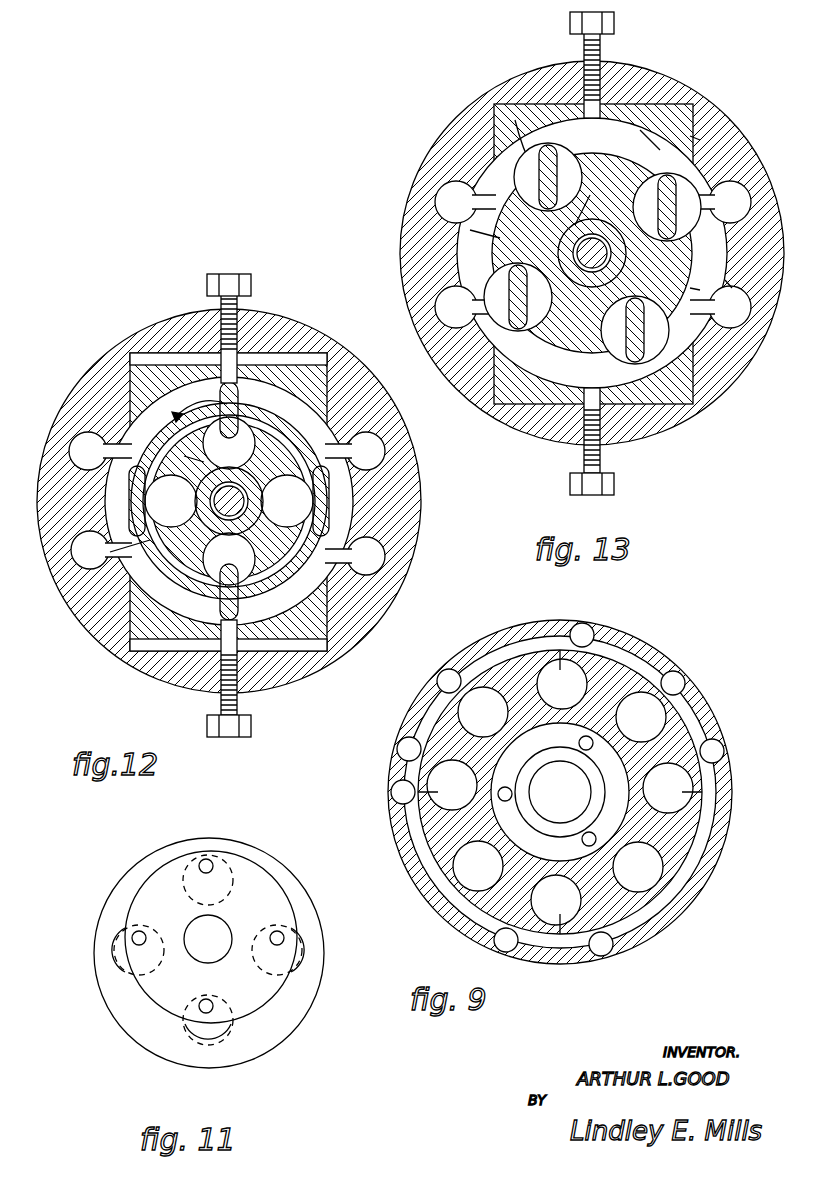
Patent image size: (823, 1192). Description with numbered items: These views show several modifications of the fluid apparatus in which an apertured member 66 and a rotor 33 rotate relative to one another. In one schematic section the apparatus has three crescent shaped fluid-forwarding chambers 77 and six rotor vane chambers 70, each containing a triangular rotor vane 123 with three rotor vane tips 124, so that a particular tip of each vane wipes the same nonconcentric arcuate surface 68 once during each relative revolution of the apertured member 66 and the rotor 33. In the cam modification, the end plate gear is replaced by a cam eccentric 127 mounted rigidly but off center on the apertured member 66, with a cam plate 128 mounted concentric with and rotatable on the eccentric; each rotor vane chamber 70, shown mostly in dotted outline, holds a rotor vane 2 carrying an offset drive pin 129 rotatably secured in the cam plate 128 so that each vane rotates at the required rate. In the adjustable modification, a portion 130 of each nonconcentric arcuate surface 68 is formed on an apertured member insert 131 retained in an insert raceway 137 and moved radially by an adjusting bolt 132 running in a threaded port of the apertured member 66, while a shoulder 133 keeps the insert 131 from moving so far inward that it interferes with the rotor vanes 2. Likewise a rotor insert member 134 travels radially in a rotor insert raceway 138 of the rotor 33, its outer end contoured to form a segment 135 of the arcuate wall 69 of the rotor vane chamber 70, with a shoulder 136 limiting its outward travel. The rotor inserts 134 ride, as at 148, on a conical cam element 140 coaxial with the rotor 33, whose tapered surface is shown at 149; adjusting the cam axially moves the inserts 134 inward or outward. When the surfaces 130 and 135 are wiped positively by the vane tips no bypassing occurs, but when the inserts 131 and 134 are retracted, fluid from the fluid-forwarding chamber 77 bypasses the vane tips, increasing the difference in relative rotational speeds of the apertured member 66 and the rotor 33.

In FIG. 12, the rotor vane 2 is at (197, 384).
In FIG. 13, the rotor vane 2 is at (507, 300).
In FIG. 12, the rotor 33 is at (148, 540).
In FIG. 13, the rotor 33 is at (573, 342).
In FIG. 9, the rotor 33 is at (709, 740).
In FIG. 12, the apertured member 66 is at (366, 599).
In FIG. 13, the apertured member 66 is at (763, 183).
In FIG. 9, the apertured member 66 is at (644, 645).
In FIG. 11, the apertured member 66 is at (115, 990).
In FIG. 12, the nonconcentric arcuate surface 68 is at (104, 455).
In FIG. 13, the nonconcentric arcuate surface 68 is at (507, 210).
In FIG. 9, the nonconcentric arcuate surface 68 is at (582, 641).
In FIG. 12, the wall of rotor vane chamber 69 is at (253, 408).
In FIG. 13, the wall of rotor vane chamber 69 is at (565, 206).
In FIG. 12, the rotor vane chamber 70 is at (230, 388).
In FIG. 13, the rotor vane chamber 70 is at (619, 338).
In FIG. 9, the rotor vane chamber 70 is at (664, 706).
In FIG. 11, the rotor vane chamber 70 is at (170, 885).
In FIG. 12, the fluid-forwarding chamber 77 is at (246, 404).
In FIG. 13, the fluid-forwarding chamber 77 is at (674, 97).
In FIG. 9, the fluid-forwarding chamber 77 is at (501, 655).
In FIG. 9, the triangular rotor vane 123 is at (484, 839).
In FIG. 9, the rotor vane tip 124 is at (422, 853).
In FIG. 11, the cam eccentric 127 is at (220, 935).
In FIG. 11, the cam plate 128 is at (240, 872).
In FIG. 11, the offset drive pin 129 is at (200, 1008).
In FIG. 12, the adjustable portion of nonconcentric arcuate surface 130 is at (183, 377).
In FIG. 13, the adjustable portion of nonconcentric arcuate surface 130 is at (639, 117).
In FIG. 12, the apertured member insert 131 is at (292, 388).
In FIG. 13, the apertured member insert 131 is at (686, 128).
In FIG. 12, the adjusting bolt 132 is at (229, 274).
In FIG. 13, the adjusting bolt 132 is at (615, 28).
In FIG. 12, the shoulder 133 is at (113, 435).
In FIG. 13, the shoulder 133 is at (495, 183).
In FIG. 12, the rotor insert member 134 is at (253, 412).
In FIG. 13, the rotor insert member 134 is at (697, 136).
In FIG. 12, the segment of arcuate surface 135 is at (199, 406).
In FIG. 13, the segment of arcuate surface 135 is at (549, 117).
In FIG. 12, the shoulder 136 is at (343, 544).
In FIG. 13, the shoulder 136 is at (732, 183).
In FIG. 12, the insert raceway 137 is at (164, 359).
In FIG. 12, the rotor insert raceway 138 is at (137, 633).
In FIG. 12, the conical cam element 140 is at (160, 527).
In FIG. 13, the conical cam element 140 is at (728, 284).
In FIG. 12, the cam surface contact 148 is at (300, 505).
In FIG. 13, the cam surface contact 148 is at (565, 272).
In FIG. 13, the tapered surface of cam 149 is at (697, 288).